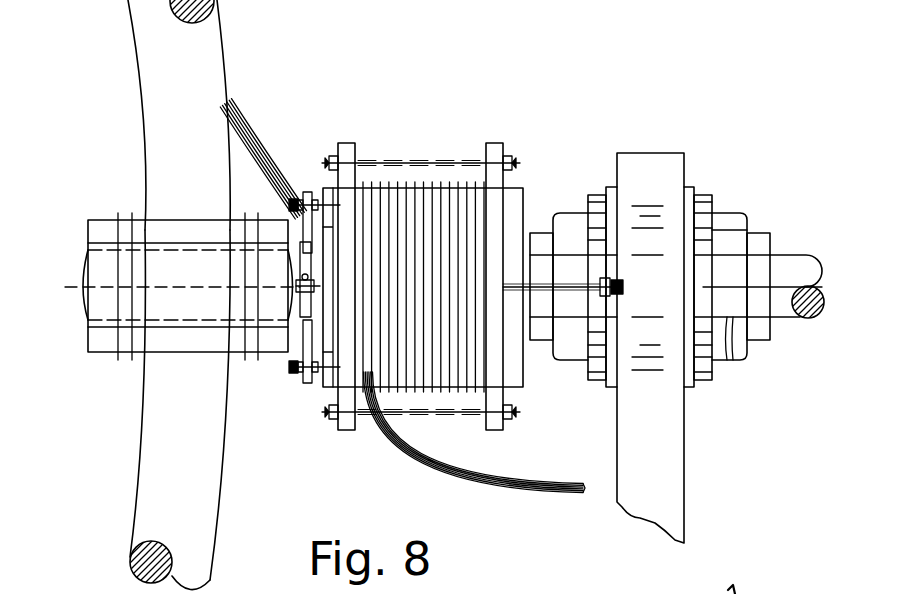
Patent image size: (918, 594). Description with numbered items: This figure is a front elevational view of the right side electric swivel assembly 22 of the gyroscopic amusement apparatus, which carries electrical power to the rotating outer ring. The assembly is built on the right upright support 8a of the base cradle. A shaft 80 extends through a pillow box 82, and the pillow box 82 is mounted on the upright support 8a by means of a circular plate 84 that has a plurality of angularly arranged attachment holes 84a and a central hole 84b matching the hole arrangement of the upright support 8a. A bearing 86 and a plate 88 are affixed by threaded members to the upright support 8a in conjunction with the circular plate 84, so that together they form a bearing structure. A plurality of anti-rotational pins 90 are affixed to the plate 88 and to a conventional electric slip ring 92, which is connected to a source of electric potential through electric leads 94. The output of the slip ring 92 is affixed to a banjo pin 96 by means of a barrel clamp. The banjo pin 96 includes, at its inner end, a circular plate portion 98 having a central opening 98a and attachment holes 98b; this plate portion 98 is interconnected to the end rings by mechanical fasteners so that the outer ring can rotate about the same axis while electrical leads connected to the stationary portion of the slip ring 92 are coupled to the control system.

The upright support beam 8a is at (672, 492).
The right side electric swivel assembly 22 is at (440, 118).
The shaft 80 is at (782, 258).
The pillow box 82 is at (733, 222).
The circular plate 84 is at (706, 212).
The attachment holes 84a is at (706, 216).
The central hole 84b is at (728, 318).
The bearing 86 is at (598, 193).
The plate 88 is at (607, 187).
The anti-rotational pins 90 is at (576, 318).
The electric slip ring 92 is at (342, 430).
The electric leads 94 is at (392, 450).
The banjo pin 96 is at (82, 300).
The circular plate portion 98 is at (82, 250).
The central opening 98a is at (167, 328).
The attachment holes 98b is at (127, 257).